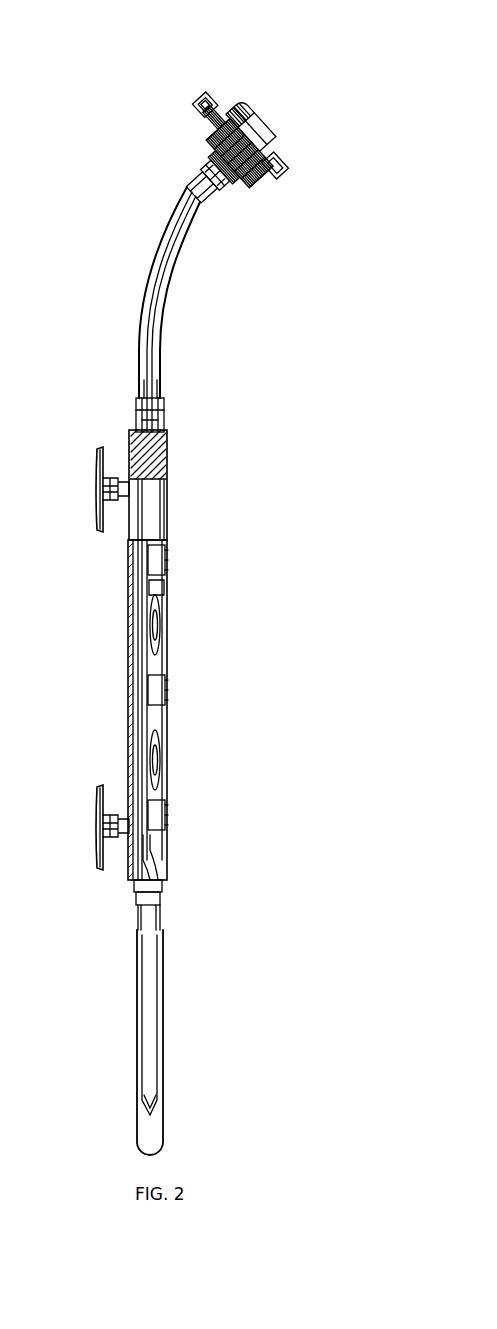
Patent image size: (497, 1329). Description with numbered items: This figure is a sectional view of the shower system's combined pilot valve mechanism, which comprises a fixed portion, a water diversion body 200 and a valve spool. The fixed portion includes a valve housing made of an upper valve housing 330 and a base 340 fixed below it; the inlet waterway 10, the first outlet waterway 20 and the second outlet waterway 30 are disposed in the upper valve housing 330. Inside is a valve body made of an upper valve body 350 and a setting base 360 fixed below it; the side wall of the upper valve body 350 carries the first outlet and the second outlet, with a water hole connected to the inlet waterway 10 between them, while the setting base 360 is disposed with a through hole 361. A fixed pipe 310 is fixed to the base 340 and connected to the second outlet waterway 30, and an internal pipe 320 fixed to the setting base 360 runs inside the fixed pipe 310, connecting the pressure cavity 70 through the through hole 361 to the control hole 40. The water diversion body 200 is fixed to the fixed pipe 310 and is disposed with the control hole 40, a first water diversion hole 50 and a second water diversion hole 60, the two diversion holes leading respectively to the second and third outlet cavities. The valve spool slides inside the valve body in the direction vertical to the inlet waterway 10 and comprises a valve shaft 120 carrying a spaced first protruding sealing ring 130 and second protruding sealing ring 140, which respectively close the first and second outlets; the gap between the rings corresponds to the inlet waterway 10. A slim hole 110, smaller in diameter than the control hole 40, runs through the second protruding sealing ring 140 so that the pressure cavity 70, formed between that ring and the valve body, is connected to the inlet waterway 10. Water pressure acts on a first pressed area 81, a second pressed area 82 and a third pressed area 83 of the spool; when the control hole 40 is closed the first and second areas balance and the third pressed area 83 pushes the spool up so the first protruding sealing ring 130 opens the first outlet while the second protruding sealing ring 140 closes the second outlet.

The inlet waterway 10 is at (232, 135).
The first outlet waterway 20 is at (270, 154).
The second outlet waterway 30 is at (205, 177).
The control hole 40 is at (167, 452).
The first water diversion hole 50 is at (168, 463).
The second water diversion hole 60 is at (133, 460).
The pressure cavity 70 is at (243, 187).
The first pressed area 81 is at (228, 135).
The second pressed area 82 is at (225, 115).
The third pressed area 83 is at (255, 128).
The slim hole 110 is at (245, 173).
The valve shaft 120 is at (262, 148).
The first protruding sealing ring 130 is at (272, 160).
The second protruding sealing ring 140 is at (243, 180).
The water diversion body 200 is at (165, 477).
The fixed pipe 310 is at (145, 290).
The internal pipe 320 is at (148, 322).
The upper valve housing 330 is at (242, 137).
The base 340 is at (205, 170).
The upper valve body 350 is at (210, 162).
The setting base 360 is at (232, 195).
The through hole 361 is at (203, 181).